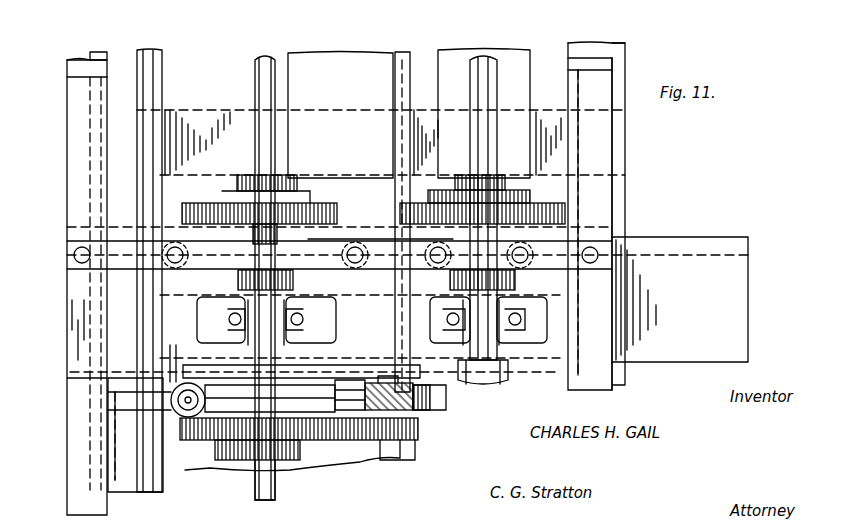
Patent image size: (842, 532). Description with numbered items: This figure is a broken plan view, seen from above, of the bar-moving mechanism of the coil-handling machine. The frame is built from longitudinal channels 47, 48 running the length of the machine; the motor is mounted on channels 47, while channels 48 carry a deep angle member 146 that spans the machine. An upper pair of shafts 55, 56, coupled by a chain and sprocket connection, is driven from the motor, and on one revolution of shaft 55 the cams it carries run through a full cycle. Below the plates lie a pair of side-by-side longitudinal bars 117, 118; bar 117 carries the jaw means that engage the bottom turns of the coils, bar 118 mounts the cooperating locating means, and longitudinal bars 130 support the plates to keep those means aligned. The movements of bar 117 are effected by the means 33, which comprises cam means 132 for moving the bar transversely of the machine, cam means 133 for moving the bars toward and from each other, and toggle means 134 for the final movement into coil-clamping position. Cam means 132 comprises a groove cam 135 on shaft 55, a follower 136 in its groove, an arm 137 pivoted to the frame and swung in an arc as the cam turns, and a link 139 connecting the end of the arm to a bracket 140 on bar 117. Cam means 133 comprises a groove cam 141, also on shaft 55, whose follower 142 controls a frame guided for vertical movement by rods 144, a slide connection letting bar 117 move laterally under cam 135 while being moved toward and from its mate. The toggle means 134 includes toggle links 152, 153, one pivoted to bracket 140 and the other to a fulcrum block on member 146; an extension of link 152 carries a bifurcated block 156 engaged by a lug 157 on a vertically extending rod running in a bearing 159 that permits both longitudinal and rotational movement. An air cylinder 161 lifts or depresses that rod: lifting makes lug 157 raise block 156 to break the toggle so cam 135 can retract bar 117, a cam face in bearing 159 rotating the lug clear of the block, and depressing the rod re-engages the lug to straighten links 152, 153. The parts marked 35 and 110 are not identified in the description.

The means for moving bars 33 is at (236, 470).
The gear 35 is at (550, 188).
The longitudinal channel 47 is at (70, 154).
The longitudinal channel 48 is at (70, 69).
The shaft 55 is at (257, 78).
The shaft 56 is at (492, 65).
The housing 110 is at (622, 215).
The longitudinal bar 117 is at (347, 60).
The longitudinal bar 118 is at (528, 80).
The longitudinal bar 130 is at (408, 60).
The cam means 132 is at (361, 463).
The cam means 133 is at (210, 206).
The toggle means 134 is at (355, 361).
The groove cam 135 is at (207, 441).
The follower 136 is at (394, 450).
The arm 137 is at (448, 395).
The link 139 is at (384, 380).
The bracket 140 is at (312, 376).
The groove cam 141 is at (402, 205).
The follower 142 is at (310, 175).
The rods 144 is at (175, 268).
The deep angle member 146 is at (544, 352).
The toggle link 152 is at (348, 386).
The toggle link 153 is at (232, 388).
The bifurcated block 156 is at (214, 370).
The lug 157 is at (173, 366).
The bearing 159 is at (118, 392).
The air cylinder 161 is at (185, 414).